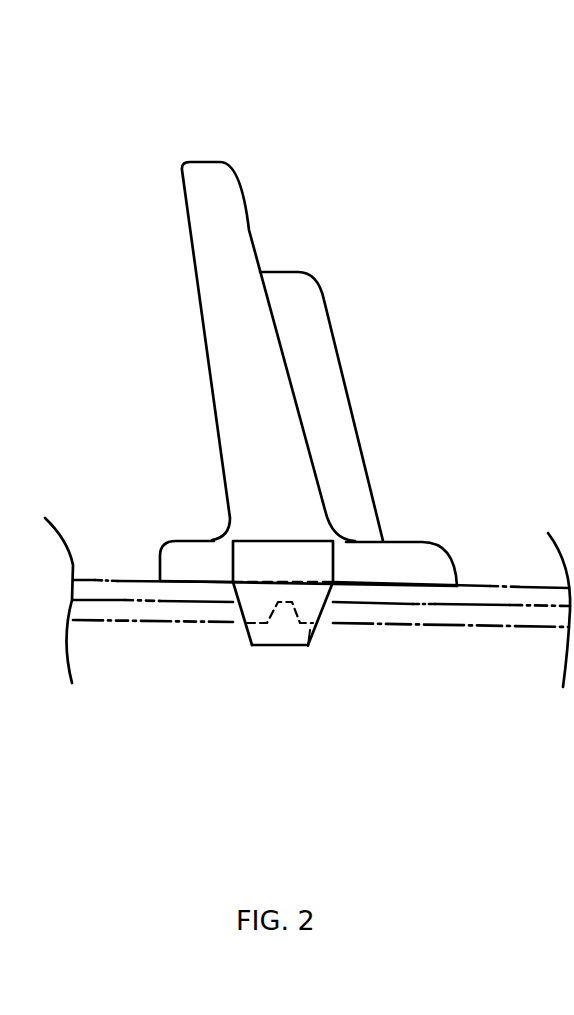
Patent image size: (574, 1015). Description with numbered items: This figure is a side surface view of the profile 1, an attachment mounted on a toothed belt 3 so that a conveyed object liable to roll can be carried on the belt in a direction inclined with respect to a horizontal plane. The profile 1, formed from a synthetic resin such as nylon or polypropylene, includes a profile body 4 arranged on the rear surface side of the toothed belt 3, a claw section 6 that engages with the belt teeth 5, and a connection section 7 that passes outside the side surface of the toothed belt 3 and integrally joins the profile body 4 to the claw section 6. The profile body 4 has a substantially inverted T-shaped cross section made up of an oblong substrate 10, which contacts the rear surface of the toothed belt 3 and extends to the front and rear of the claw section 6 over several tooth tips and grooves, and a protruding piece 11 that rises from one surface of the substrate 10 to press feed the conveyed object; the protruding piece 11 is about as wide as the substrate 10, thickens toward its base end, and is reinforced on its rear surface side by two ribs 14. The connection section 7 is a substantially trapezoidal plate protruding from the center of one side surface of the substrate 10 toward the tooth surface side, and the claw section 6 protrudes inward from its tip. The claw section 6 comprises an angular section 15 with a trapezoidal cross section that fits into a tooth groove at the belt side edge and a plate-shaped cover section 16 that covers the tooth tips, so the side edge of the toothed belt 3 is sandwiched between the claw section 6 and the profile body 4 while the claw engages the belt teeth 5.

The profile 1 is at (412, 129).
The toothed belt 3 is at (527, 598).
The profile body 4 is at (418, 479).
The belt teeth 5 is at (452, 618).
The claw section 6 is at (262, 650).
The connection section 7 is at (253, 597).
The substrate 10 is at (410, 563).
The protruding piece 11 is at (235, 246).
The ribs 14 is at (325, 360).
The angular section 15 is at (283, 614).
The cover section 16 is at (308, 646).